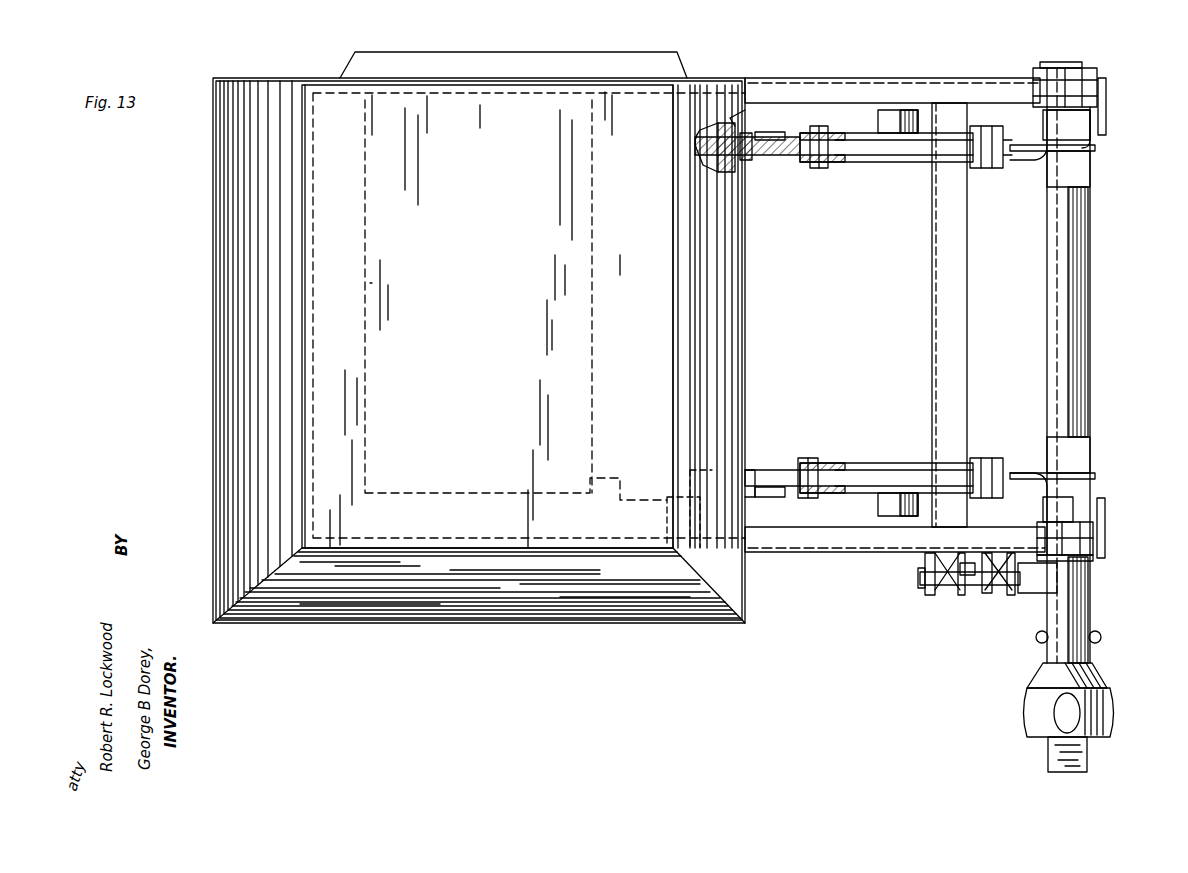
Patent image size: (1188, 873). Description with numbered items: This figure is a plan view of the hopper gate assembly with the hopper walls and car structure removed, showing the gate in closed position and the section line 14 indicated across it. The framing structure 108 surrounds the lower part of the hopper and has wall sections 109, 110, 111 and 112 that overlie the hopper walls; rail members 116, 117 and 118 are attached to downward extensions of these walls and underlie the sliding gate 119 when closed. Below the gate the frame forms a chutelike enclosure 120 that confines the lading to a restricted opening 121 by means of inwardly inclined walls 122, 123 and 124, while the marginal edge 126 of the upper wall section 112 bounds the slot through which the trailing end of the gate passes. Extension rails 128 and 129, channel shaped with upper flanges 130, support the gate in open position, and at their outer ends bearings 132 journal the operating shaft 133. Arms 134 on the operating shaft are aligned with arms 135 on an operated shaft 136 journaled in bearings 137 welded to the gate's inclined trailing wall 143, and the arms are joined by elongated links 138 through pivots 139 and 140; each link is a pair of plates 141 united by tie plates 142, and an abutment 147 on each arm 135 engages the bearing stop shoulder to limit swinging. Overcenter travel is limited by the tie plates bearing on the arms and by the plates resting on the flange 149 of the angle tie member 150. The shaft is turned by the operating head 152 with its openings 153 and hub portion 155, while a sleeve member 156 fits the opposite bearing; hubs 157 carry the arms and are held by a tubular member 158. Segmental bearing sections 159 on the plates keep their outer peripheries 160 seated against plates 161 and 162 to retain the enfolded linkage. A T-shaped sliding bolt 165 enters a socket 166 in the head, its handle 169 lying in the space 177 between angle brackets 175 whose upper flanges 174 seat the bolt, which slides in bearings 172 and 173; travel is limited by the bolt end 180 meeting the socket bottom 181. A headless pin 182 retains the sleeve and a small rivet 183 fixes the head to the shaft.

The section line 14- 14 is at (213, 483).
The framing structure 108 is at (210, 250).
The wall section 109 is at (482, 76).
The wall section 110 is at (446, 612).
The wall section 111 is at (222, 352).
The wall section 112 is at (740, 280).
The rail member 116 is at (456, 95).
The rail member 117 is at (426, 548).
The rail member 118 is at (306, 358).
The sliding gate 119 is at (492, 314).
The chutelike enclosure 120 is at (706, 68).
The restricted opening 121 is at (378, 150).
The inwardly inclined wall 122 is at (355, 290).
The inwardly inclined wall 123 is at (410, 505).
The inwardly inclined wall 124 is at (605, 337).
The marginal edge 126 is at (678, 242).
The extension rail 128 is at (768, 77).
The extension rail 129 is at (768, 554).
The upper flange 130 is at (825, 77).
The bearing 132 is at (1092, 75).
The operating shaft 133 is at (1072, 334).
The arm 134 is at (1016, 152).
The arm 135 is at (780, 156).
The operated shaft 136 is at (728, 172).
The bearing 137 is at (712, 138).
The elongated link 138 is at (882, 172).
The pivot 139 is at (982, 168).
The pivot 140 is at (816, 168).
The plate 141 is at (920, 160).
The tie plate 142 is at (980, 126).
The inclined wall 143 is at (700, 282).
The abutment 147 is at (765, 132).
The flange 149 is at (968, 293).
The tie member 150 is at (928, 294).
The operating head 152 is at (1022, 676).
The opening 153 is at (1050, 712).
The hub portion 155 is at (1070, 500).
The sleeve member 156 is at (1106, 118).
The hub 157 is at (1088, 176).
The tubular member 158 is at (1068, 293).
The segmental bearing section 159 is at (897, 110).
The outer periphery 160 is at (878, 120).
The plate 161 is at (1043, 120).
The plate 162 is at (1106, 110).
The sliding bolt 165 is at (930, 578).
The socket 166 is at (1034, 593).
The handle 169 is at (966, 596).
The bearing 172 is at (924, 560).
The bearing 173 is at (1008, 596).
The upper flange 174 is at (990, 565).
The angle shaped bracket 175 is at (972, 610).
The intervening space 177 is at (964, 608).
The end of bolt 180 is at (1094, 572).
The bottom of socket 181 is at (1094, 596).
The headless pin 182 is at (1100, 82).
The rivet 183 is at (1098, 636).